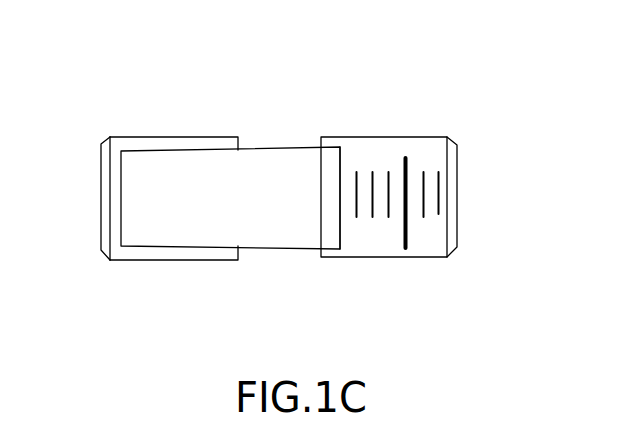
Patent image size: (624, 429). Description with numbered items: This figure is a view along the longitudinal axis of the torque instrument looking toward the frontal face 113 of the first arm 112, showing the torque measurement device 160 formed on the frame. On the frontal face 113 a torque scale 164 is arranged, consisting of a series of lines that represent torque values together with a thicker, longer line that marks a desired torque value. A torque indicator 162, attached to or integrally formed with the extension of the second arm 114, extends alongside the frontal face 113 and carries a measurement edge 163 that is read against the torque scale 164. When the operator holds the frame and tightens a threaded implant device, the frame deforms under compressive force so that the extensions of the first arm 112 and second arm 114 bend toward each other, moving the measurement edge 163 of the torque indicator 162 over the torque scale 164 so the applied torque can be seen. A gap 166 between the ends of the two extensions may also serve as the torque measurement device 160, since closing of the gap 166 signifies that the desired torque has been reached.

The first arm 112 is at (395, 137).
The frontal face 113 is at (437, 163).
The second arm 114 is at (110, 260).
The torque measurement device 160 is at (263, 127).
The torque indicator 162 is at (170, 137).
The measurement edge 163 is at (340, 156).
The torque scale 164 is at (418, 233).
The gap 166 is at (278, 250).